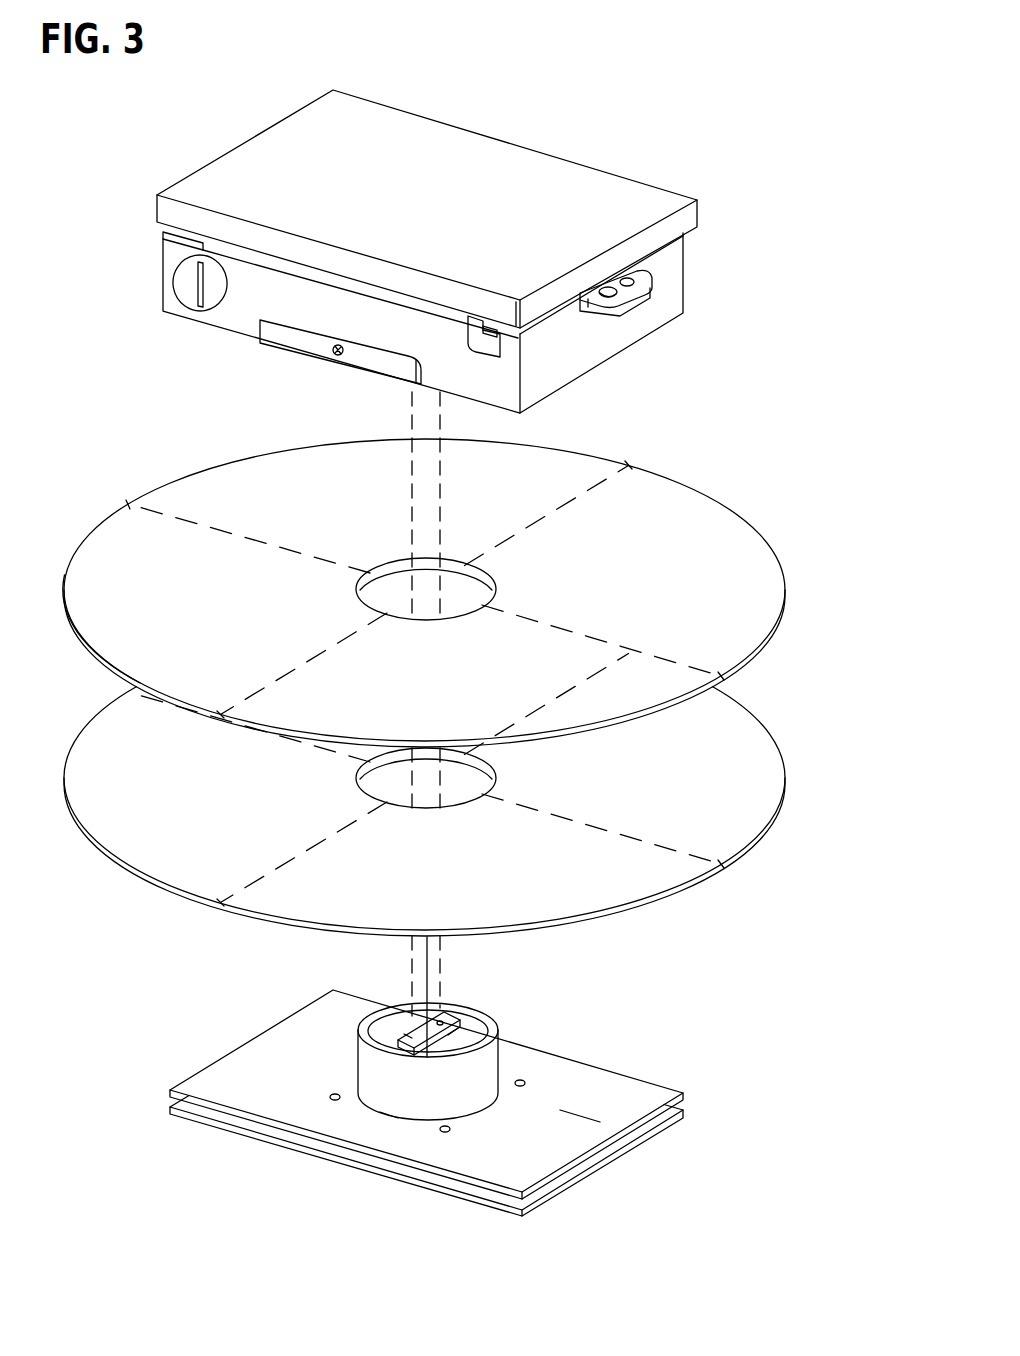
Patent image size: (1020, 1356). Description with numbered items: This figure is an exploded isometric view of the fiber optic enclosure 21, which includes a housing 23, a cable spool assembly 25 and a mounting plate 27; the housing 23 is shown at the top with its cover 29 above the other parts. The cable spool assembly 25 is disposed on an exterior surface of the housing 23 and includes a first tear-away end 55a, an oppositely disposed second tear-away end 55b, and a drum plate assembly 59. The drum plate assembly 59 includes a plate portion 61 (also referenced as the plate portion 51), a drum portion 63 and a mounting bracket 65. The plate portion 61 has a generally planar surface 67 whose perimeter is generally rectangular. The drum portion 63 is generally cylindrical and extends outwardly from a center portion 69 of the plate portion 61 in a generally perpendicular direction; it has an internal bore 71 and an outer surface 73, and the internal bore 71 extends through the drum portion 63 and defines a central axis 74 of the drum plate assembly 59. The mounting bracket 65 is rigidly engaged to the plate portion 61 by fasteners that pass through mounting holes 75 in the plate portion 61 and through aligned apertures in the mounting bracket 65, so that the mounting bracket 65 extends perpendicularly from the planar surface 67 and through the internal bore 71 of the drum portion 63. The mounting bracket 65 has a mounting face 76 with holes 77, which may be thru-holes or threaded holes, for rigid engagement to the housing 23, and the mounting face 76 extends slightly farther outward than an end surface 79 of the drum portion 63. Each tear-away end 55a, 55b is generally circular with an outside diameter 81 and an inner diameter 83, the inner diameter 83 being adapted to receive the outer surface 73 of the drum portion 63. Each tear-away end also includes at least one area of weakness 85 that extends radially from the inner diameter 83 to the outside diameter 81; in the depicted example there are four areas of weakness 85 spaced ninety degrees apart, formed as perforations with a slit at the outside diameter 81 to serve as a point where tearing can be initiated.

The fiber optic enclosure 21 is at (121, 253).
The housing 23 is at (708, 256).
The cable spool assembly 25 is at (768, 871).
The mounting plate 27 is at (650, 1138).
The lid 29 is at (580, 193).
The plate portion 51 is at (618, 1085).
The first tear-away end 55a is at (690, 500).
The second tear-away end 55b is at (735, 716).
The drum plate assembly 59 is at (137, 1090).
The plate portion 61 is at (240, 1058).
The drum portion 63 is at (507, 1063).
The mounting bracket 65 is at (452, 1040).
The planar surface 67 is at (538, 1159).
The center portion 69 is at (393, 1124).
The internal bore 71 is at (395, 1020).
The outer surface 73 is at (428, 1099).
The central axis 74 is at (427, 948).
The mounting holes 75 is at (332, 1097).
The mounting face 76 is at (446, 1014).
The holes 77 is at (408, 1038).
The end surface 79 is at (488, 1018).
The outside diameter 81 is at (93, 651).
The inner diameter 83 is at (383, 570).
The area of weakness 85 is at (205, 524).